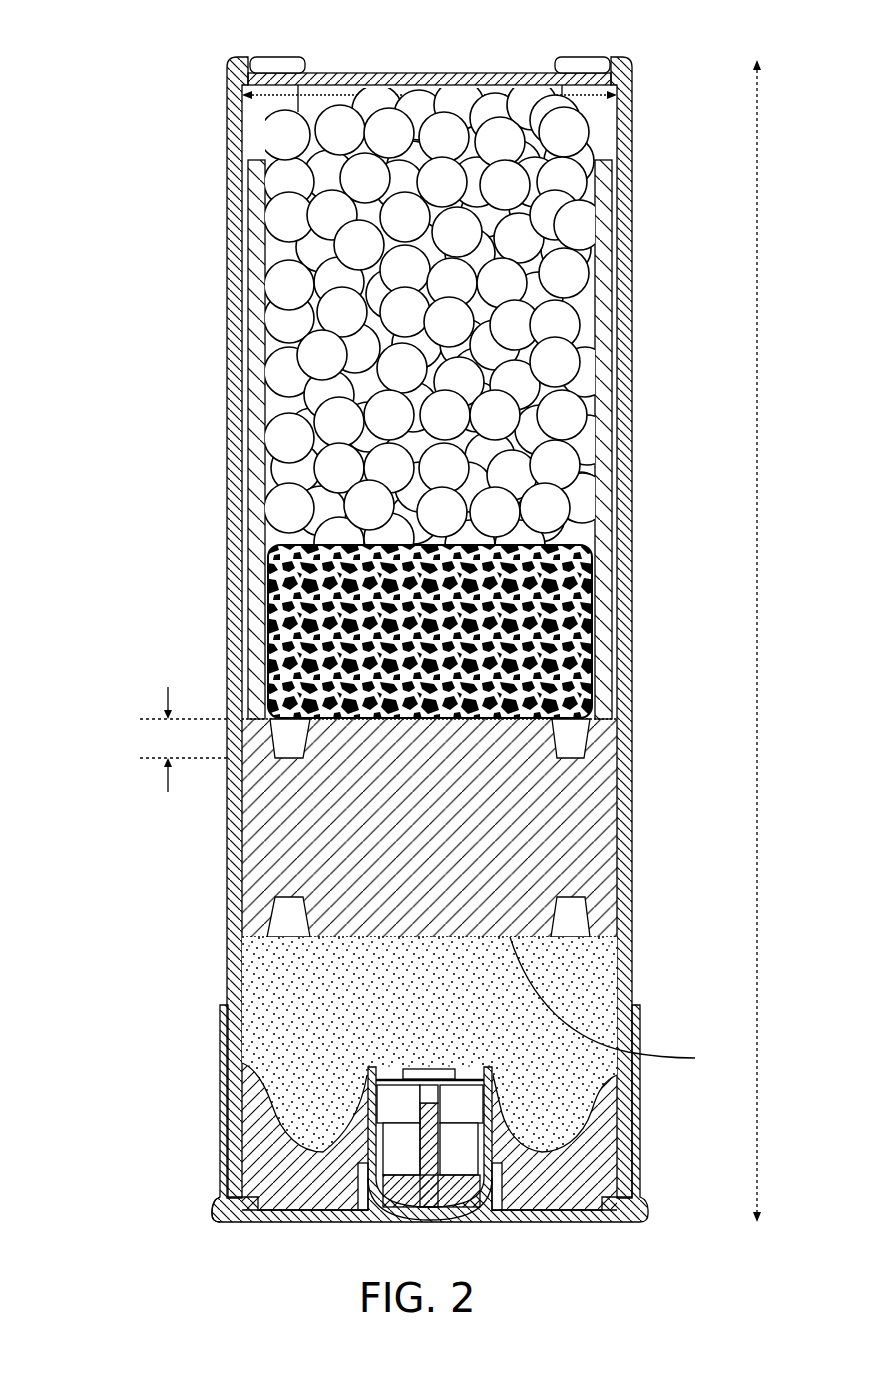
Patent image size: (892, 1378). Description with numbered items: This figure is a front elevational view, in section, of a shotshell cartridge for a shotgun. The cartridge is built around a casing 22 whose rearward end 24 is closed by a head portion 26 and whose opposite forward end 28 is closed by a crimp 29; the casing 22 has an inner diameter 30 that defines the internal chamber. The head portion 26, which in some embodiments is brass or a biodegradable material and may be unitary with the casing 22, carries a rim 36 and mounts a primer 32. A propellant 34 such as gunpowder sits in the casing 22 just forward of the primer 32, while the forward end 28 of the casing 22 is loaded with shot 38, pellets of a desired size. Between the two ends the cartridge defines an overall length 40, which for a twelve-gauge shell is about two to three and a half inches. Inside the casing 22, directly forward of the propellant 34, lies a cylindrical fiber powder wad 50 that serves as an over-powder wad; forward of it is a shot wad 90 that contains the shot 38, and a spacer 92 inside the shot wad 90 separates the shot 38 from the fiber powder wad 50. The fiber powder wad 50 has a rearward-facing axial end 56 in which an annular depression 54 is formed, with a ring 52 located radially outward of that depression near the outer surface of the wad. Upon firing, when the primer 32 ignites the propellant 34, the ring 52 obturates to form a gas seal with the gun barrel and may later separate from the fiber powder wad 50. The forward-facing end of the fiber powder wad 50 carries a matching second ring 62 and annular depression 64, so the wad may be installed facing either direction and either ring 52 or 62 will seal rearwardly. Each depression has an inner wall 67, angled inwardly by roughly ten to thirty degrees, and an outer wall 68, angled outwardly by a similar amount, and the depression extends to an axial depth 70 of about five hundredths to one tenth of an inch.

The casing 22 is at (222, 105).
The rearward end 24 is at (676, 958).
The head portion 26 is at (220, 1105).
The forward end 28 is at (654, 144).
The crimp 29 is at (628, 60).
The inner diameter 30 is at (338, 88).
The primer 32 is at (392, 1216).
The propellant 34 is at (268, 1002).
The rim 36 is at (213, 1203).
The shot 38 is at (288, 180).
The overall length 40 is at (760, 570).
The fiber powder wad 50 is at (634, 856).
The ring 52 is at (237, 908).
The annular depression 54 is at (570, 912).
The rearward-facing axial end 56 is at (618, 1004).
The second ring 62 is at (262, 725).
The annular depression 64 is at (566, 741).
The inner wall 67 is at (293, 910).
The outer wall 68 is at (253, 918).
The axial depth 70 is at (166, 702).
The shot wad 90 is at (248, 333).
The spacer 92 is at (519, 537).